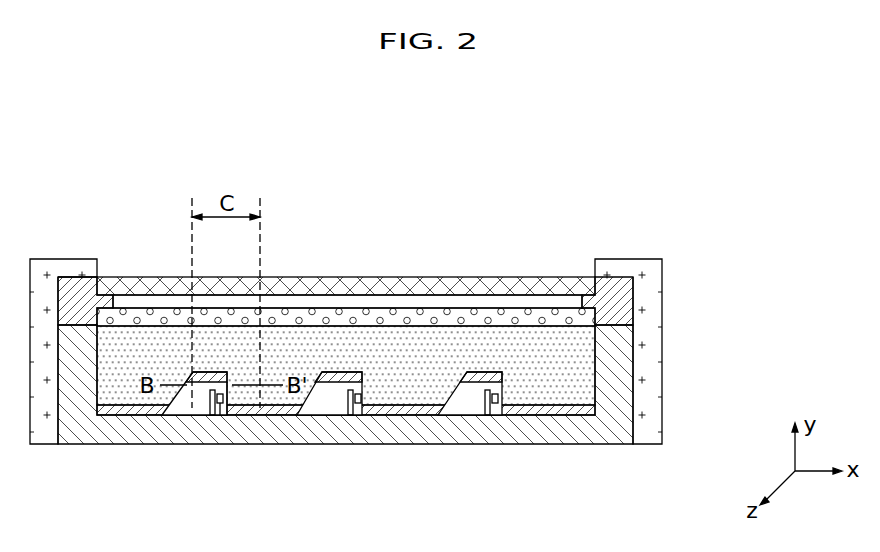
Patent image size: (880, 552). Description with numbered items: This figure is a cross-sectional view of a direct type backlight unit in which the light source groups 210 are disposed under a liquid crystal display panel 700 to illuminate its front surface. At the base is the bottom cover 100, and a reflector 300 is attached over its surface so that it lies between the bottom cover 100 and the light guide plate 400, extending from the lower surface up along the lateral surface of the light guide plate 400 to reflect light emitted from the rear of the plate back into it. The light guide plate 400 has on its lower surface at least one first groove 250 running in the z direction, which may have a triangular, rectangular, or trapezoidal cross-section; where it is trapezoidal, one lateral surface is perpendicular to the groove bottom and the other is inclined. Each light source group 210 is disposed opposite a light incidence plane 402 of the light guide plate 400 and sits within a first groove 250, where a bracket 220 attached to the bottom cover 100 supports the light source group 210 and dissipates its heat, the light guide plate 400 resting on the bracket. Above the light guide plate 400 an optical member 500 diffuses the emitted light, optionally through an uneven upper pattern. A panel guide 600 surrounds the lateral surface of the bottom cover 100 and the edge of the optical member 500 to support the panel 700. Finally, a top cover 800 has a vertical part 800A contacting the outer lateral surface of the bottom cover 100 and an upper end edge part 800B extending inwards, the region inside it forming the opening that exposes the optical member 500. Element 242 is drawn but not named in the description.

The bottom cover 100 is at (627, 433).
The light source group 210 is at (218, 413).
The bracket 220 is at (210, 410).
The second electrode 242 is at (226, 383).
The first groove 250 is at (197, 410).
The reflector 300 is at (595, 385).
The light guide plate 400 is at (573, 363).
The light incidence plane 402 is at (225, 407).
The optical member 500 is at (590, 317).
The panel guide 600 is at (627, 305).
The liquid crystal display panel 700 is at (587, 287).
The top cover 800 is at (418, 318).
The vertical part 800A is at (665, 270).
The upper end edge part 800B is at (638, 259).